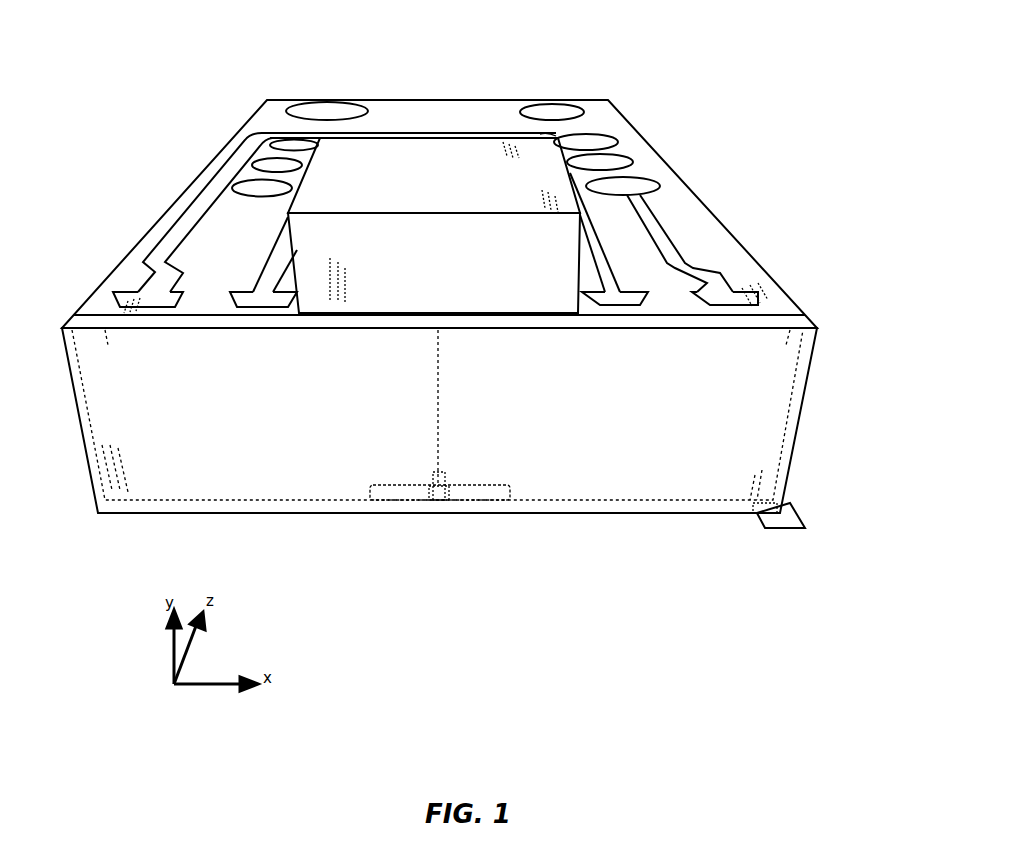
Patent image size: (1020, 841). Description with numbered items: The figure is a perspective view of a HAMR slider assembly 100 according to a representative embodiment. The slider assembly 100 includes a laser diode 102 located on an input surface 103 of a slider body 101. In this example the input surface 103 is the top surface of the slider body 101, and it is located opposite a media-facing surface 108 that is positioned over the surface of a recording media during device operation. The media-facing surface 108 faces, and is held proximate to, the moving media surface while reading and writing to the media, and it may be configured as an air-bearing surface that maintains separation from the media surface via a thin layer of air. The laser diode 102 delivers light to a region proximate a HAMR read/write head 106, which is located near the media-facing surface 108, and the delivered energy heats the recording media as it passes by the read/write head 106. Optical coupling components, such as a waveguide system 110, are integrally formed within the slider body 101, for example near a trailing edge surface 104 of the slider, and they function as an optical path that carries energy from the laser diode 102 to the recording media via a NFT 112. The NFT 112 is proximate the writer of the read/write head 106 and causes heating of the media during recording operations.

The HAMR slider assembly 100 is at (624, 42).
The slider body 101 is at (242, 127).
The laser diode 102 is at (394, 152).
The input surface 103 is at (121, 268).
The trailing edge surface 104 is at (158, 489).
The HAMR read/write head 106 is at (445, 502).
The media-facing surface 108 is at (797, 530).
The waveguide system 110 is at (440, 398).
The NFT 112 is at (437, 503).